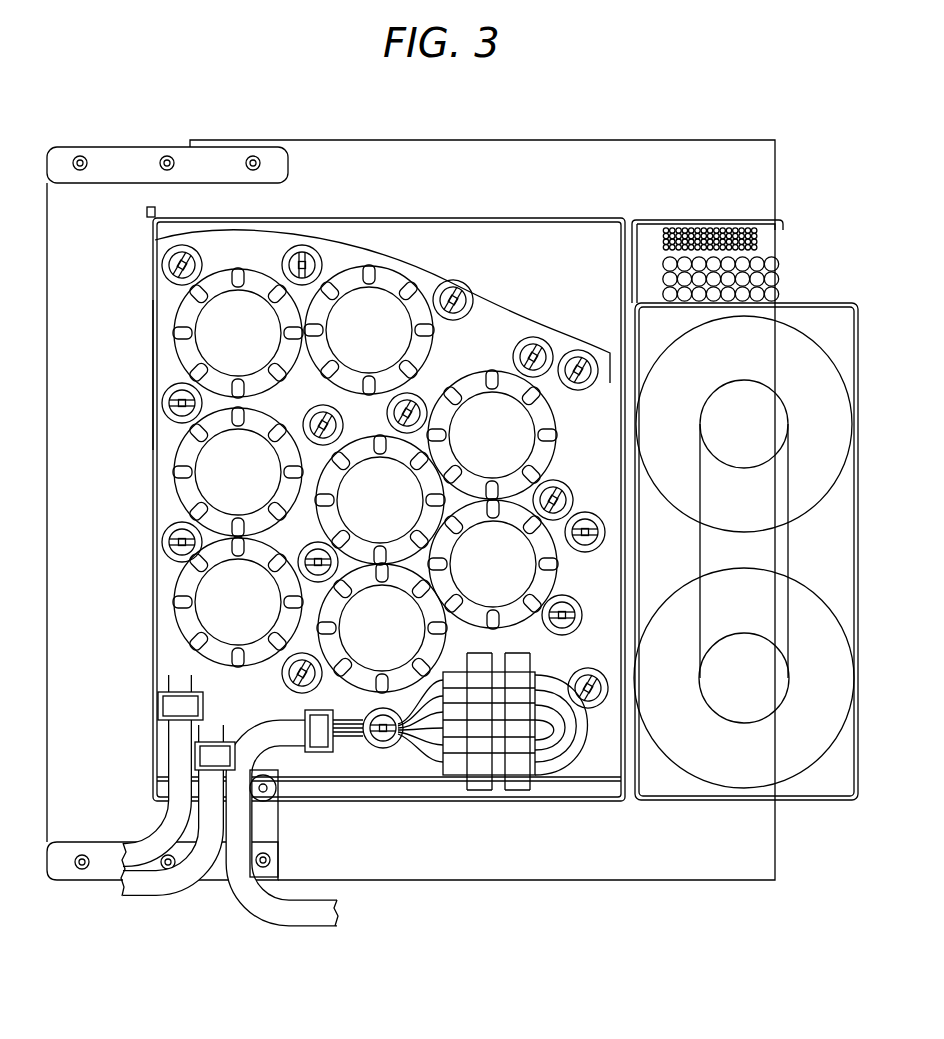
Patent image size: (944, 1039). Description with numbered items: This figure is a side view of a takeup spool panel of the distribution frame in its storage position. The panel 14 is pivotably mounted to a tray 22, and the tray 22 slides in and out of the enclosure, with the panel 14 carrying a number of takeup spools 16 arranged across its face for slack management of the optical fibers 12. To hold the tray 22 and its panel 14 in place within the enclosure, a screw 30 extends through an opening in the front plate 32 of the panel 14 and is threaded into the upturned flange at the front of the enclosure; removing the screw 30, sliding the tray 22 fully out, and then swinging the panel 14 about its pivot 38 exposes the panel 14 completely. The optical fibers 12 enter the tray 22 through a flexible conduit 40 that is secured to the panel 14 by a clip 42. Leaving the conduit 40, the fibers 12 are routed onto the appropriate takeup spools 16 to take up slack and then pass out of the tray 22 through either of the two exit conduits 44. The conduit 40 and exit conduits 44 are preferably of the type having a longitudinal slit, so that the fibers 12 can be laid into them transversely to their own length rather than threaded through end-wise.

The optical fibers 12 is at (389, 765).
The panel 14 is at (514, 298).
The takeup spools 16 is at (491, 371).
The tray 22 is at (370, 218).
The screw 30 is at (147, 210).
The front plate 32 is at (153, 369).
The pivot 38 is at (268, 796).
The flexible conduit 40 is at (298, 920).
The clip 42 is at (312, 710).
The exit conduits 44 is at (148, 847).